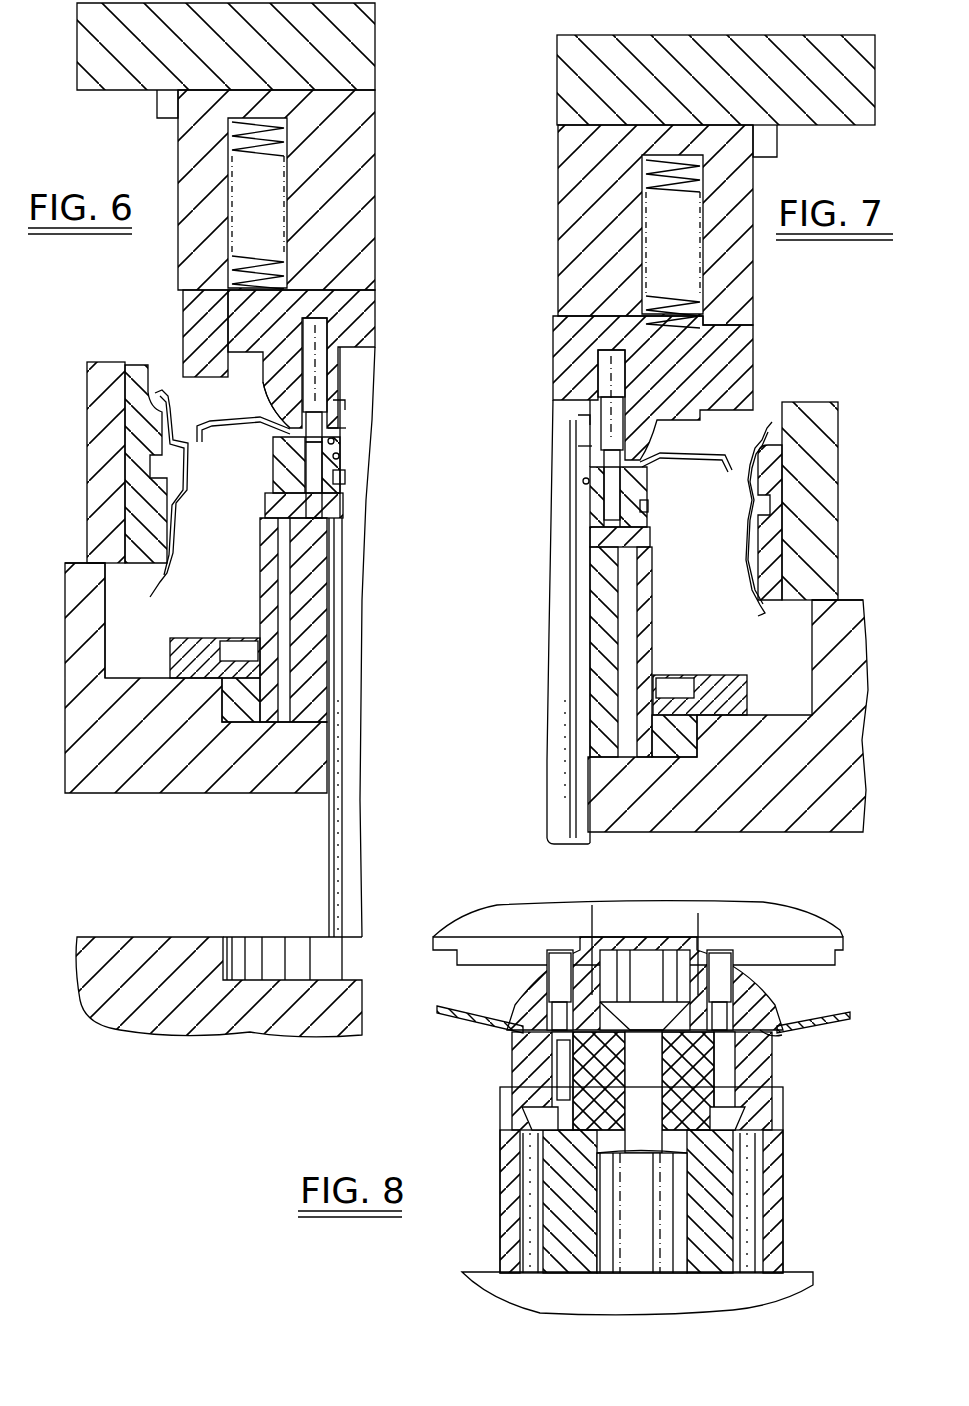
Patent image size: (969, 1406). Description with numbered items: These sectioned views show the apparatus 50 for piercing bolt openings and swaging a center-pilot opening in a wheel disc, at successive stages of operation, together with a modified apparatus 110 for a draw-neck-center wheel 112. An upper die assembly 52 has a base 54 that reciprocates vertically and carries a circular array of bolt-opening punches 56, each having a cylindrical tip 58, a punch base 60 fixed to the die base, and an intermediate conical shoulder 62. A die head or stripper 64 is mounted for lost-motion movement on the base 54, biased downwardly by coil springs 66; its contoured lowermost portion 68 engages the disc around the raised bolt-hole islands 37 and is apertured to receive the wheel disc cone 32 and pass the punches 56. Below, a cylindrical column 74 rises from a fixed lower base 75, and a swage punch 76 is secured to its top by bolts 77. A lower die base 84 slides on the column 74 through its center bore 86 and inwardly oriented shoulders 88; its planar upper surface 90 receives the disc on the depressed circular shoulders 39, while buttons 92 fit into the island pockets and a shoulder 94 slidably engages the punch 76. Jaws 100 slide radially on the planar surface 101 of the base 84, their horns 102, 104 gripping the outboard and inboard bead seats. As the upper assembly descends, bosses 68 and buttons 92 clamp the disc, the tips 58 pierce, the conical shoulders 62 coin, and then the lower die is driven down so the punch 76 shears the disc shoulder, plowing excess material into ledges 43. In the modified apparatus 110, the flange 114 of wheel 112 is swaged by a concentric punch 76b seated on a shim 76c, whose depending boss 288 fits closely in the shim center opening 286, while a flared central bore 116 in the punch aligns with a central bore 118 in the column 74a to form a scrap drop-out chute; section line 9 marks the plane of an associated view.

In FIG. 8, the section line 9 is at (644, 950).
In FIG. 6, the wheel disc cone 32 is at (346, 402).
In FIG. 7, the wheel disc cone 32 is at (580, 418).
In FIG. 6, the raised bolt-hole island 37 is at (342, 430).
In FIG. 6, the depressed circular shoulder 39 is at (336, 441).
In FIG. 7, the ledge 43 is at (586, 446).
In FIG. 6, the apparatus 50 is at (259, 145).
In FIG. 7, the apparatus 50 is at (716, 171).
In FIG. 6, the upper die assembly 52 is at (155, 96).
In FIG. 7, the upper die assembly 52 is at (778, 138).
In FIG. 6, the base 54 is at (377, 20).
In FIG. 7, the base 54 is at (682, 35).
In FIG. 6, the bolt-opening punch 56 is at (337, 372).
In FIG. 7, the bolt-opening punch 56 is at (572, 345).
In FIG. 8, the bolt-opening punch 56 is at (720, 960).
In FIG. 6, the cylindrical tip 58 is at (276, 470).
In FIG. 7, the cylindrical tip 58 is at (645, 490).
In FIG. 6, the punch base 60 is at (340, 352).
In FIG. 6, the conical shoulder 62 is at (290, 450).
In FIG. 6, the die head or stripper 64 is at (380, 288).
In FIG. 7, the die head or stripper 64 is at (752, 340).
In FIG. 8, the die head or stripper 64 is at (507, 983).
In FIG. 6, the coil spring 66 is at (232, 138).
In FIG. 7, the coil spring 66 is at (706, 172).
In FIG. 6, the contoured portion or annular boss 68 is at (282, 420).
In FIG. 6, the cylindrical column 74 is at (363, 626).
In FIG. 7, the cylindrical column 74 is at (550, 782).
In FIG. 8, the column 74a is at (610, 1187).
In FIG. 6, the fixed lower base 75 is at (185, 937).
In FIG. 6, the swage punch 76 is at (367, 470).
In FIG. 7, the swage punch 76 is at (553, 463).
In FIG. 8, the swage punch 76b is at (540, 1028).
In FIG. 8, the shim 76c is at (607, 1057).
In FIG. 8, the bolt 77 is at (634, 998).
In FIG. 6, the lower die base 84 is at (238, 795).
In FIG. 7, the lower die base 84 is at (690, 827).
In FIG. 6, the center bore 86 is at (336, 680).
In FIG. 7, the center bore 86 is at (588, 597).
In FIG. 6, the radially inwardly oriented shoulder 88 is at (322, 618).
In FIG. 7, the radially inwardly oriented shoulder 88 is at (592, 657).
In FIG. 6, the planar upper surface 90 is at (268, 428).
In FIG. 7, the planar upper surface 90 is at (648, 468).
In FIG. 8, the planar upper surface 90 is at (770, 1036).
In FIG. 6, the button 92 is at (346, 478).
In FIG. 7, the button 92 is at (650, 508).
In FIG. 8, the button 92 is at (742, 1067).
In FIG. 6, the shoulder 94 is at (341, 456).
In FIG. 7, the shoulder 94 is at (581, 480).
In FIG. 6, the jaw 100 is at (86, 361).
In FIG. 7, the jaw 100 is at (829, 400).
In FIG. 6, the planar surface 101 is at (78, 561).
In FIG. 7, the planar surface 101 is at (852, 600).
In FIG. 6, the horn 102 is at (140, 364).
In FIG. 7, the horn 102 is at (770, 452).
In FIG. 6, the horn 104 is at (162, 586).
In FIG. 7, the horn 104 is at (758, 596).
In FIG. 8, the modified apparatus 110 is at (639, 1093).
In FIG. 8, the draw-neck-center wheel 112 is at (830, 1012).
In FIG. 8, the flange 114 is at (618, 1018).
In FIG. 8, the central bore 116 is at (670, 972).
In FIG. 8, the central bore 118 is at (762, 1155).
In FIG. 8, the shim center opening 286 is at (647, 1068).
In FIG. 8, the depending center boss 288 is at (600, 1045).